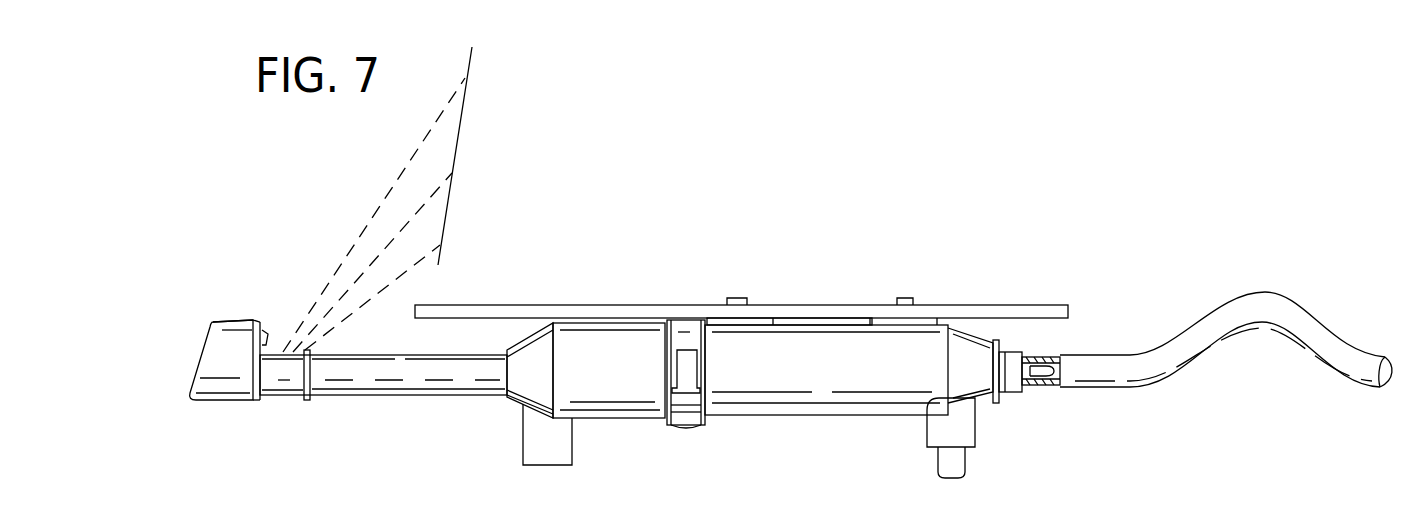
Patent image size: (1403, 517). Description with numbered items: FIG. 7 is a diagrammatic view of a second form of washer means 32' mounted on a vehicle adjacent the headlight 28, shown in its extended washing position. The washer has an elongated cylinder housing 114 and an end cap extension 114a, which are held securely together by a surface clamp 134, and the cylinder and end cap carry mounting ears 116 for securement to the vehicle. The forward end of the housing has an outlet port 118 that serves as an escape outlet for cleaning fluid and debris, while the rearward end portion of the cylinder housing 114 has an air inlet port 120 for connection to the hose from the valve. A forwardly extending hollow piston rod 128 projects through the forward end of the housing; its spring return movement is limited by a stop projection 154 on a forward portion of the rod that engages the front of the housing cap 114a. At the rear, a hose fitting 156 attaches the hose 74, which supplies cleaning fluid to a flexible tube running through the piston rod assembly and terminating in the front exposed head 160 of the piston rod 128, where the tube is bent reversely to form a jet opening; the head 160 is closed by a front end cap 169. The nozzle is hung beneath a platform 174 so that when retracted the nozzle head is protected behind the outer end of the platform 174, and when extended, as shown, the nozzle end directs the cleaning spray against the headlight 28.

The headlight 28 is at (468, 72).
The front end cap 169 is at (220, 366).
The front exposed head 160 is at (232, 322).
The stop projection 154 is at (306, 400).
The forwardly extending hollow piston rod 128 is at (397, 396).
The outlet port 118 is at (523, 447).
The end cap extension 114a is at (641, 388).
The surface clamp 134 is at (693, 328).
The mounting ears 116 is at (763, 321).
The elongated cylinder housing 114 is at (864, 382).
The platform 174 is at (958, 312).
The washer means 32' is at (825, 455).
The air inlet port 120 is at (966, 433).
The hose fitting 156 is at (1048, 385).
The hose 74 is at (1198, 332).